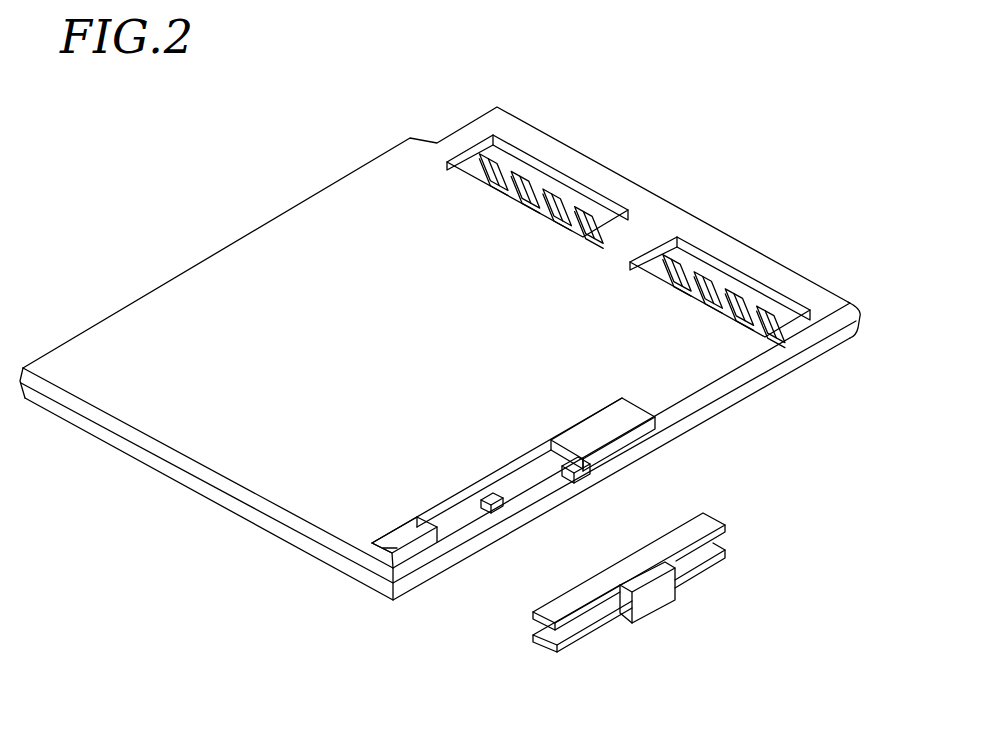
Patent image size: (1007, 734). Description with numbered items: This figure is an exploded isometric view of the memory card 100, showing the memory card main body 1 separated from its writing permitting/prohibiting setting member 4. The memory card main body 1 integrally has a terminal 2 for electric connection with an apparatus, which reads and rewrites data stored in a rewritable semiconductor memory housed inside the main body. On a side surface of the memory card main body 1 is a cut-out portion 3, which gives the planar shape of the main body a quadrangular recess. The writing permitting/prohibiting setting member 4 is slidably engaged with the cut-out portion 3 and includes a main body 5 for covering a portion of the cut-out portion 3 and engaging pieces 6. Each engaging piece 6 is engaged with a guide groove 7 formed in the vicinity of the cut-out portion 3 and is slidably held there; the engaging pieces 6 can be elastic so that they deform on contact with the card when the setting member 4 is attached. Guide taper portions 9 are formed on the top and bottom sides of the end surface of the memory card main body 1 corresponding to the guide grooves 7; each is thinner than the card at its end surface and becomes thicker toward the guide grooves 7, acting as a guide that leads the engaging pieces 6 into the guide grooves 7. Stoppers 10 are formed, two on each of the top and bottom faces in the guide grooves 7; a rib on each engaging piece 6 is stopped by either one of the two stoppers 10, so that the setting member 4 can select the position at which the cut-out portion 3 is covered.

The memory card 100 is at (758, 72).
The memory card main body 1 is at (203, 305).
The terminal 2 is at (520, 173).
The cut-out portion 3 is at (517, 510).
The writing permitting/prohibiting setting member 4 is at (798, 540).
The main body 5 is at (655, 597).
The engaging pieces 6 is at (695, 523).
The guide groove 7 is at (395, 548).
The guide taper portions 9 is at (640, 428).
The stoppers 10 is at (503, 500).